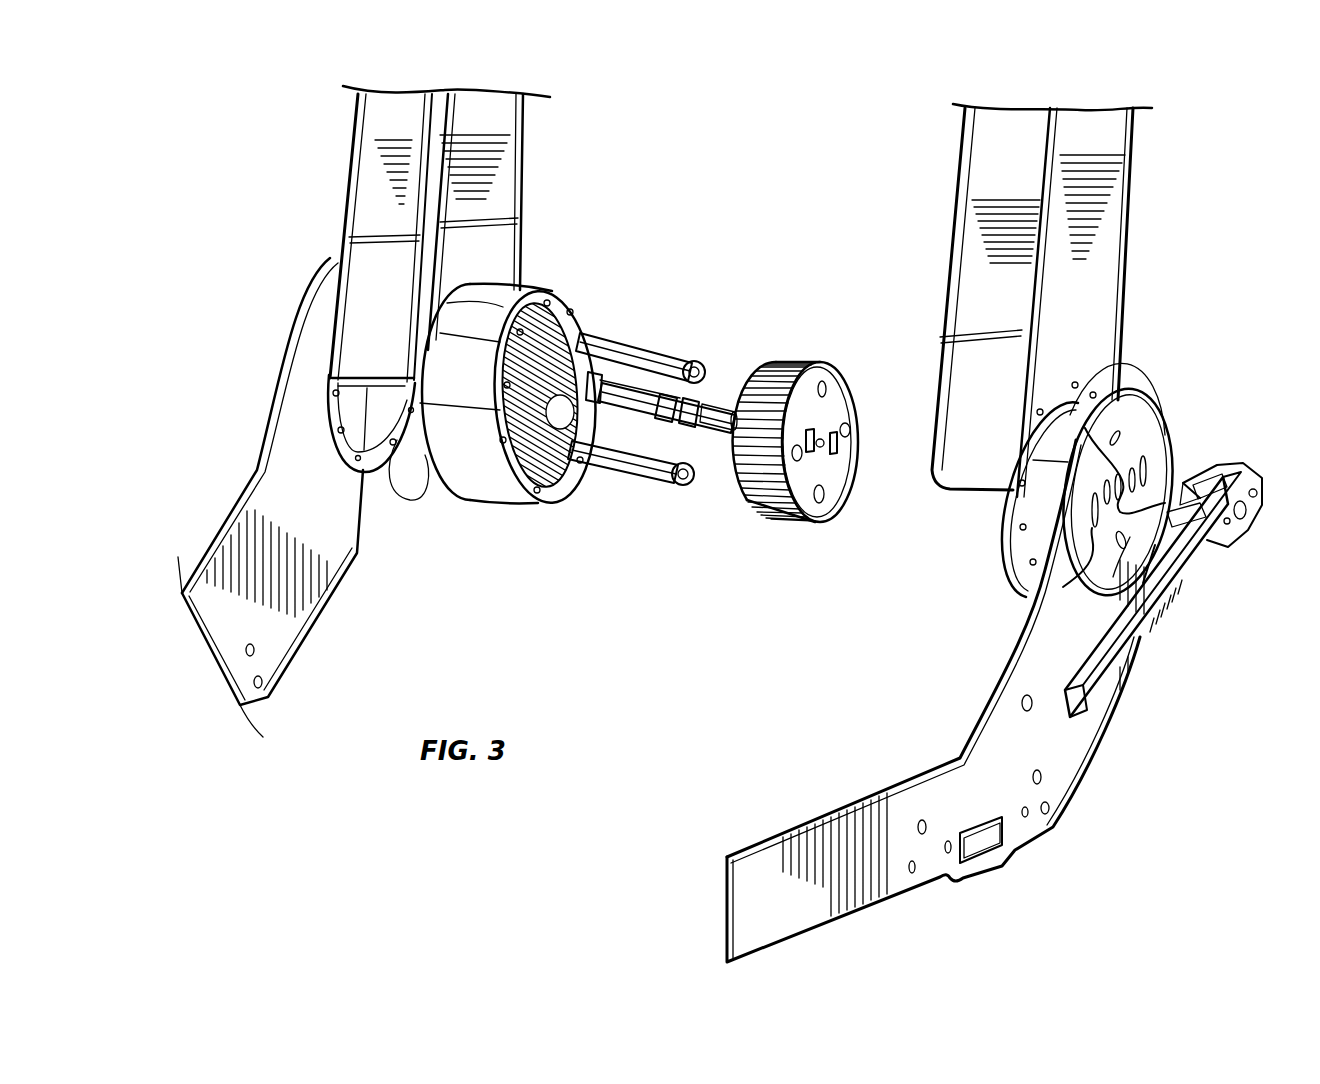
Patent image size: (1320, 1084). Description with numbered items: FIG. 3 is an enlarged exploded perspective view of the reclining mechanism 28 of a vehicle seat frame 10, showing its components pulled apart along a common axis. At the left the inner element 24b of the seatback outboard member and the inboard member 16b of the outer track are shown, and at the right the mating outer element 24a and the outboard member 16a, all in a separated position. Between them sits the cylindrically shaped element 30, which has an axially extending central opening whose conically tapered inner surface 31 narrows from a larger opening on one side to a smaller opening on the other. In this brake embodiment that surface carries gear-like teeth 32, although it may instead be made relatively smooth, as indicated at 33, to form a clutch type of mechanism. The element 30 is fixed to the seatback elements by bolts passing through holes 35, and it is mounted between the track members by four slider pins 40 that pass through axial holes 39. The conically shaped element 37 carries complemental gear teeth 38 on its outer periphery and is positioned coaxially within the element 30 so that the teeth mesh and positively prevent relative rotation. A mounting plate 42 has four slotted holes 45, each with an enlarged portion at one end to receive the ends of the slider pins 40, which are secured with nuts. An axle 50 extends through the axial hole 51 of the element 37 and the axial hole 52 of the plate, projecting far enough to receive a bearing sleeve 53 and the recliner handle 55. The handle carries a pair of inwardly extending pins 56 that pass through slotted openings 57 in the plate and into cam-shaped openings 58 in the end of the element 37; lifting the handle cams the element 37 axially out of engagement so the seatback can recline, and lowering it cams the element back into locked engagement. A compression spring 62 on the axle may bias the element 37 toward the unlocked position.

The seat frame 10 is at (660, 727).
The out board member 16a is at (828, 833).
The in board member 16b is at (283, 652).
The outer element 24a is at (1107, 247).
The inner element 24b is at (373, 148).
The reclining mechanism 28 is at (657, 510).
The cylindrically shaped element 30 is at (493, 482).
The conically tapered inner surface 31 is at (547, 478).
The gear-like teeth 32 is at (578, 340).
The smooth surface 33 is at (567, 470).
The holes 35 is at (510, 470).
The conically shaped element 37 is at (808, 515).
The gear teeth 38 is at (803, 360).
The holes 39 is at (787, 490).
The slider pins 40 is at (685, 478).
The mounting plate 42 is at (1163, 453).
The slotted holes 45 is at (1120, 585).
The axle 50 is at (718, 403).
The axial hole 51 is at (760, 503).
The axial holes 52 is at (1122, 390).
The bearing sleeve 53 is at (705, 385).
The recliner handle 55 is at (1120, 657).
The inwardly extending pins 56 is at (1195, 470).
The slotted openings 57 is at (1157, 505).
The openings 58 is at (803, 403).
The compression spring 62 is at (603, 373).